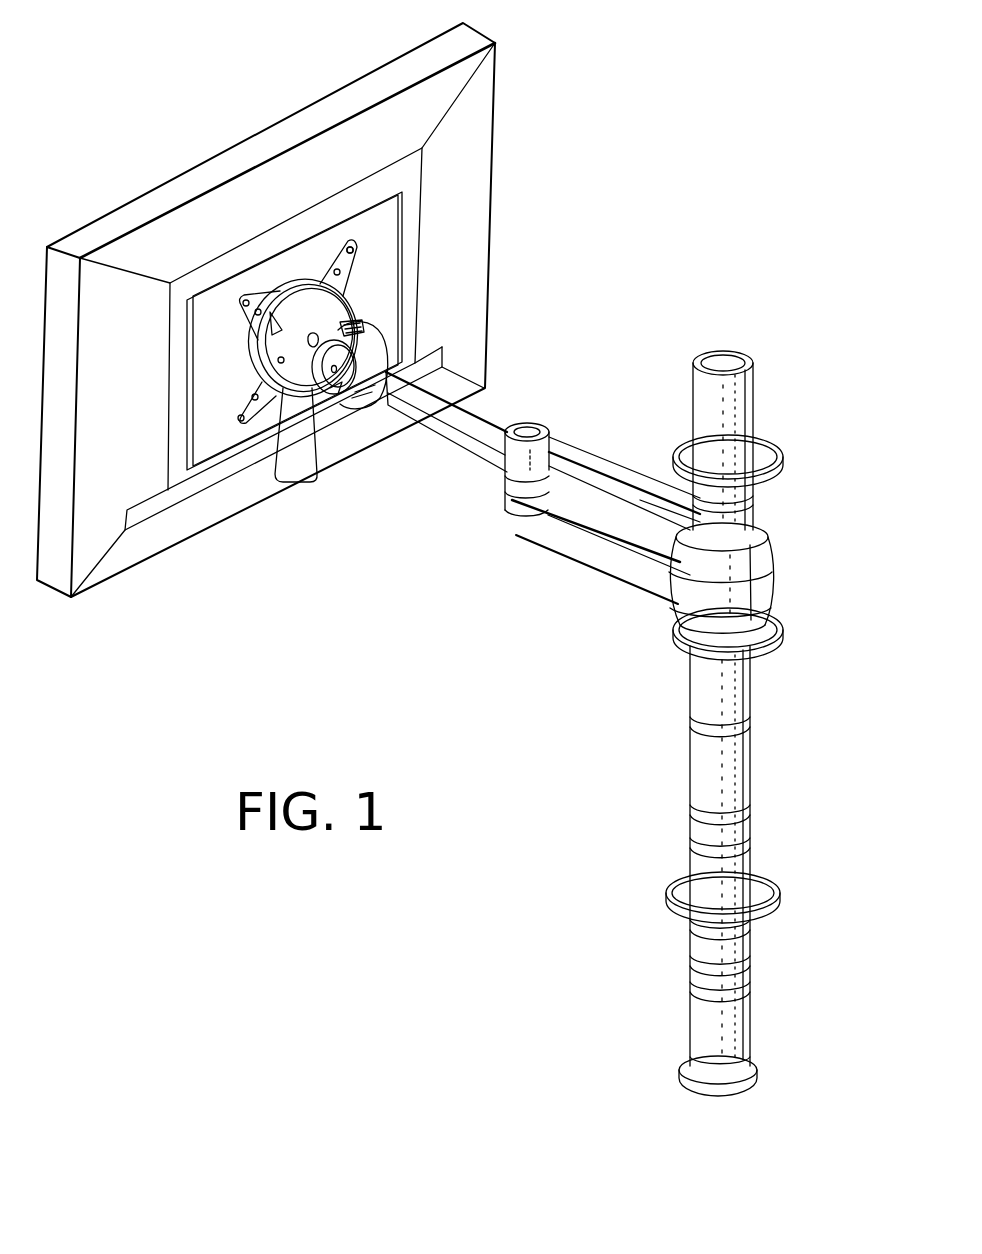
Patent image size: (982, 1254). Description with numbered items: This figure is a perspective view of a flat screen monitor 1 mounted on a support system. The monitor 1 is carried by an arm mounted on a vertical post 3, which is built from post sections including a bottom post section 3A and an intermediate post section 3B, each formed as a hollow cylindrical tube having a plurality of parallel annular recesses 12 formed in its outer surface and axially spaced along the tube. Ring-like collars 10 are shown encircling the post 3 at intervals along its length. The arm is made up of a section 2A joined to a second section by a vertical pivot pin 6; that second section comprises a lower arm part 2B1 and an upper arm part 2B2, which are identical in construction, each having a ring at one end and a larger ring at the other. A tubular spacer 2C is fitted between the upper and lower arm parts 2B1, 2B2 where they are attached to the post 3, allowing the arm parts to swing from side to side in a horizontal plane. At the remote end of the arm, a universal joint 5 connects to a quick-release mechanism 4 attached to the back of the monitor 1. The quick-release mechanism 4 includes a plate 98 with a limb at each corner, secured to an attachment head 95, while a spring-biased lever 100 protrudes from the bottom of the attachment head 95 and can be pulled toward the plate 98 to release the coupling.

The flat screen monitor 1 is at (482, 107).
The arm section 2A is at (478, 425).
The lower arm part 2B1 is at (582, 530).
The upper arm part 2B2 is at (595, 478).
The tubular spacer 2C is at (758, 580).
The vertical post 3 is at (747, 723).
The bottom post section 3A is at (740, 1053).
The intermediate post section 3B is at (743, 412).
The quick-release mechanism 4 is at (274, 288).
The universal joint 5 is at (340, 382).
The vertical pivot pin 6 is at (528, 432).
The ring collar 10 is at (780, 636).
The annular recesses 12 is at (747, 723).
The attachment head 95 is at (292, 343).
The plate 98 is at (356, 260).
The lever 100 is at (292, 472).